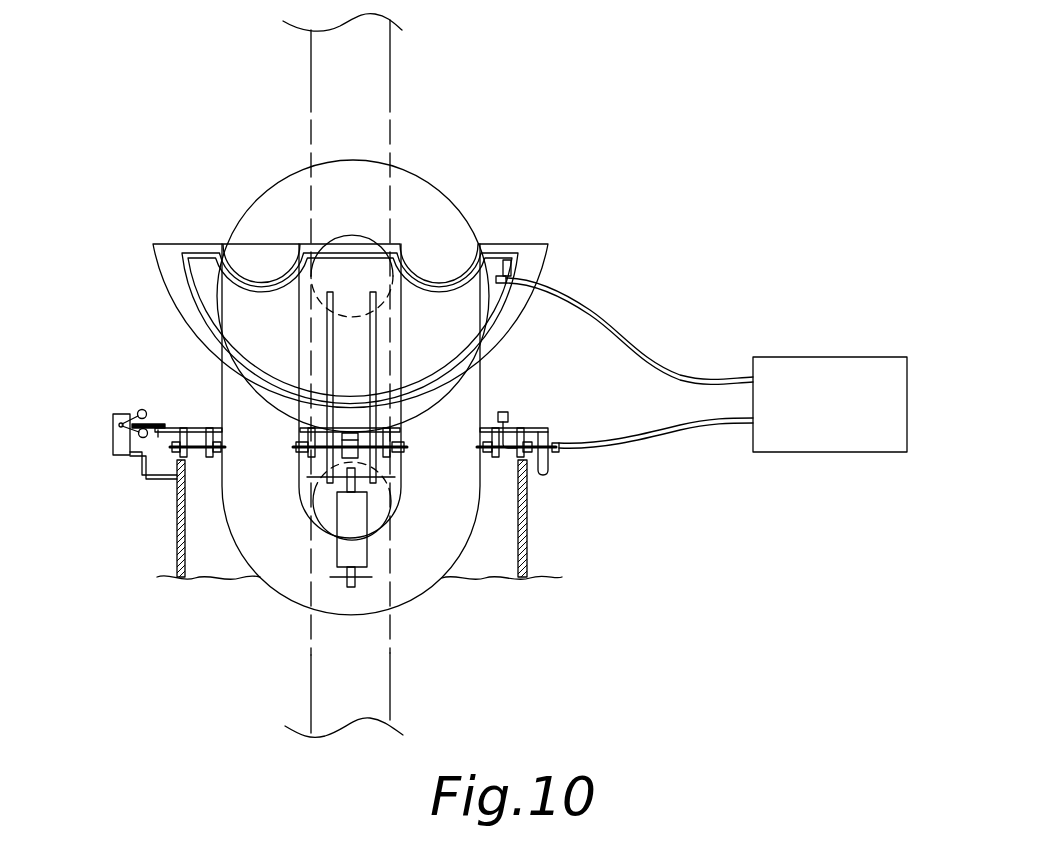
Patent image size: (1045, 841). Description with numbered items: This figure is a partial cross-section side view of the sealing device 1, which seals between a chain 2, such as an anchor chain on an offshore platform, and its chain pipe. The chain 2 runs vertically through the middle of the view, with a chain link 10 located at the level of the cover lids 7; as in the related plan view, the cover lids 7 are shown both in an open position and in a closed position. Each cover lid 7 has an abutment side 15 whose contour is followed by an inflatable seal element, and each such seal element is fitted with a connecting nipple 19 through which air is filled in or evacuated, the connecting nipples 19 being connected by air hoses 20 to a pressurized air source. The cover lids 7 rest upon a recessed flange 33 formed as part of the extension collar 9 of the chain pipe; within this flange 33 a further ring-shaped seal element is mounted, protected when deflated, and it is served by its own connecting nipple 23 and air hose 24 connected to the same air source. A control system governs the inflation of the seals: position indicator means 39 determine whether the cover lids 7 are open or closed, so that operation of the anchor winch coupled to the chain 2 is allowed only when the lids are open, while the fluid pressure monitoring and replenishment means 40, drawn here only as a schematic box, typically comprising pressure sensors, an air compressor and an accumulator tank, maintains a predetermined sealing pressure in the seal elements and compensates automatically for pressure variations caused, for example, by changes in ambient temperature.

The sealing device 1 is at (117, 331).
The chain 2 is at (311, 82).
The cover lids 7 is at (546, 265).
The extension collar 9 is at (528, 549).
The chain link 10 is at (413, 197).
The abutment sides 15 is at (497, 250).
The connecting nipple 19 is at (538, 252).
The air hoses 20 is at (630, 350).
The connecting nipple 23 is at (557, 444).
The air hose 24 is at (663, 443).
The recessed flange 33 is at (532, 463).
The position indicator means 39 is at (120, 435).
The fluid pressure monitoring and replenishment means 40 is at (843, 419).